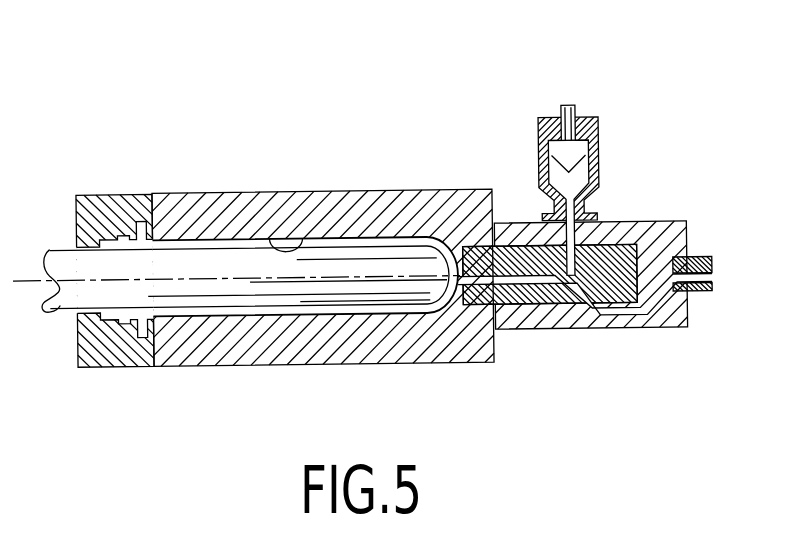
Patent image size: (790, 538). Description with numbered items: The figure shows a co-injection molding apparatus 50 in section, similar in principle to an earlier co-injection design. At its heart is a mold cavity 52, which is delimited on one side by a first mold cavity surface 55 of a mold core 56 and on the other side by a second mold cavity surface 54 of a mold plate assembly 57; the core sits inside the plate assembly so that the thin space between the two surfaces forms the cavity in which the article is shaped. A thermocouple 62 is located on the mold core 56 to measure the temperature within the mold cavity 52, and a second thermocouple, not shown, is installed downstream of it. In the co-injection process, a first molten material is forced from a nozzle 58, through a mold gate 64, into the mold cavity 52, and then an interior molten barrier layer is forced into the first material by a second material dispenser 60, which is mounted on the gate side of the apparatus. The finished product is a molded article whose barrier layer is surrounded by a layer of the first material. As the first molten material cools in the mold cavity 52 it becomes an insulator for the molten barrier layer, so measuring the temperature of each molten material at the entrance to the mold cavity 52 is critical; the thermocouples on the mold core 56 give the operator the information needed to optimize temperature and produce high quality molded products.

The co-injection molding apparatus 50 is at (188, 135).
The mold cavity 52 is at (213, 320).
The second mold cavity surface 54 is at (299, 241).
The first mold cavity surface 55 is at (333, 312).
The mold core 56 is at (320, 283).
The mold plate assembly 57 is at (126, 368).
The nozzle 58 is at (707, 293).
The second material dispenser 60 is at (604, 130).
The thermocouple 62 is at (398, 254).
The mold gate 64 is at (466, 290).